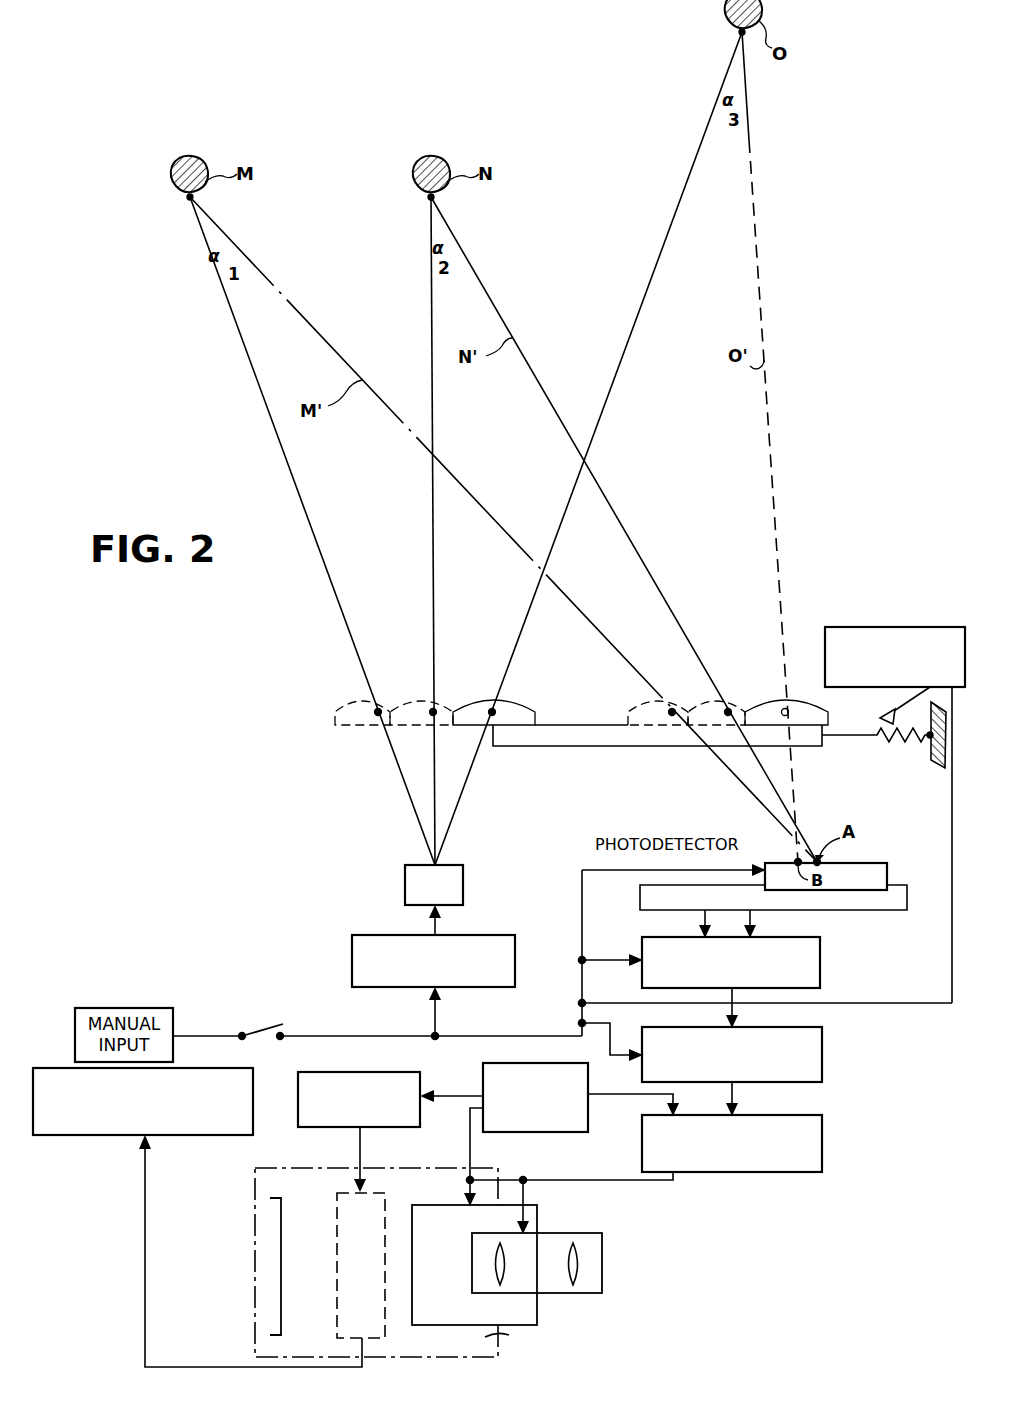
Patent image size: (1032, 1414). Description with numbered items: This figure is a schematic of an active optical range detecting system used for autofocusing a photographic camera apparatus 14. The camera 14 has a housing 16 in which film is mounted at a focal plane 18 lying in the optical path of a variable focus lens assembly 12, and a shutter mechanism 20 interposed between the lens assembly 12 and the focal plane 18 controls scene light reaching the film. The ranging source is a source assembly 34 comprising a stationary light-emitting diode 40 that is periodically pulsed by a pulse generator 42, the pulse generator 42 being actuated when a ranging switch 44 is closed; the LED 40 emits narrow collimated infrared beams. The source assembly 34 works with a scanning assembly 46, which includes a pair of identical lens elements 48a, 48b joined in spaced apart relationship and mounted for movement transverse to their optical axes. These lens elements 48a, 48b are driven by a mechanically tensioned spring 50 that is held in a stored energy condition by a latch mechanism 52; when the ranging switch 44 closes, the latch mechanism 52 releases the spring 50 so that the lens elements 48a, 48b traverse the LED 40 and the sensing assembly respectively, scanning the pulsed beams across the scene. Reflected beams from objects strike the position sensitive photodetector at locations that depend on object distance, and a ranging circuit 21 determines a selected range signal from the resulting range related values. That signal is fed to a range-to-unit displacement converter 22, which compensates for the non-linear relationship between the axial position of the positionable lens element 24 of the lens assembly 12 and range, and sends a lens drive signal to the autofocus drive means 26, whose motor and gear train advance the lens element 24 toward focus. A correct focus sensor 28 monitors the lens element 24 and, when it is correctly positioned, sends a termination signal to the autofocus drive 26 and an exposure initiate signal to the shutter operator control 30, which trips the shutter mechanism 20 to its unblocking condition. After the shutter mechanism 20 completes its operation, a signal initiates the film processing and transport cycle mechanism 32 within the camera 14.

The variable focus lens assembly 12 is at (578, 1218).
The photographic camera apparatus 14 is at (506, 1336).
The housing 16 is at (255, 1168).
The focal plane 18 is at (282, 1222).
The shutter mechanism 20 is at (376, 1200).
The ranging circuit 21 is at (820, 963).
The range-to-unit displacement converter 22 is at (815, 1055).
The positionable lens element 24 is at (494, 1250).
The autofocus drive means 26 is at (812, 1148).
The correct focus sensor 28 is at (536, 1063).
The shutter operator control 30 is at (360, 1072).
The film processing and transport cycle mechanism 32 is at (94, 1136).
The source assembly 34 is at (324, 938).
The light-emitting diode 40 is at (463, 886).
The pulse generator 42 is at (482, 935).
The ranging switch 44 is at (262, 1028).
The scanning assembly 46 is at (330, 687).
The lens element 48a is at (508, 694).
The lens element 48b is at (774, 696).
The spring 50 is at (884, 738).
The latch mechanism 52 is at (880, 627).